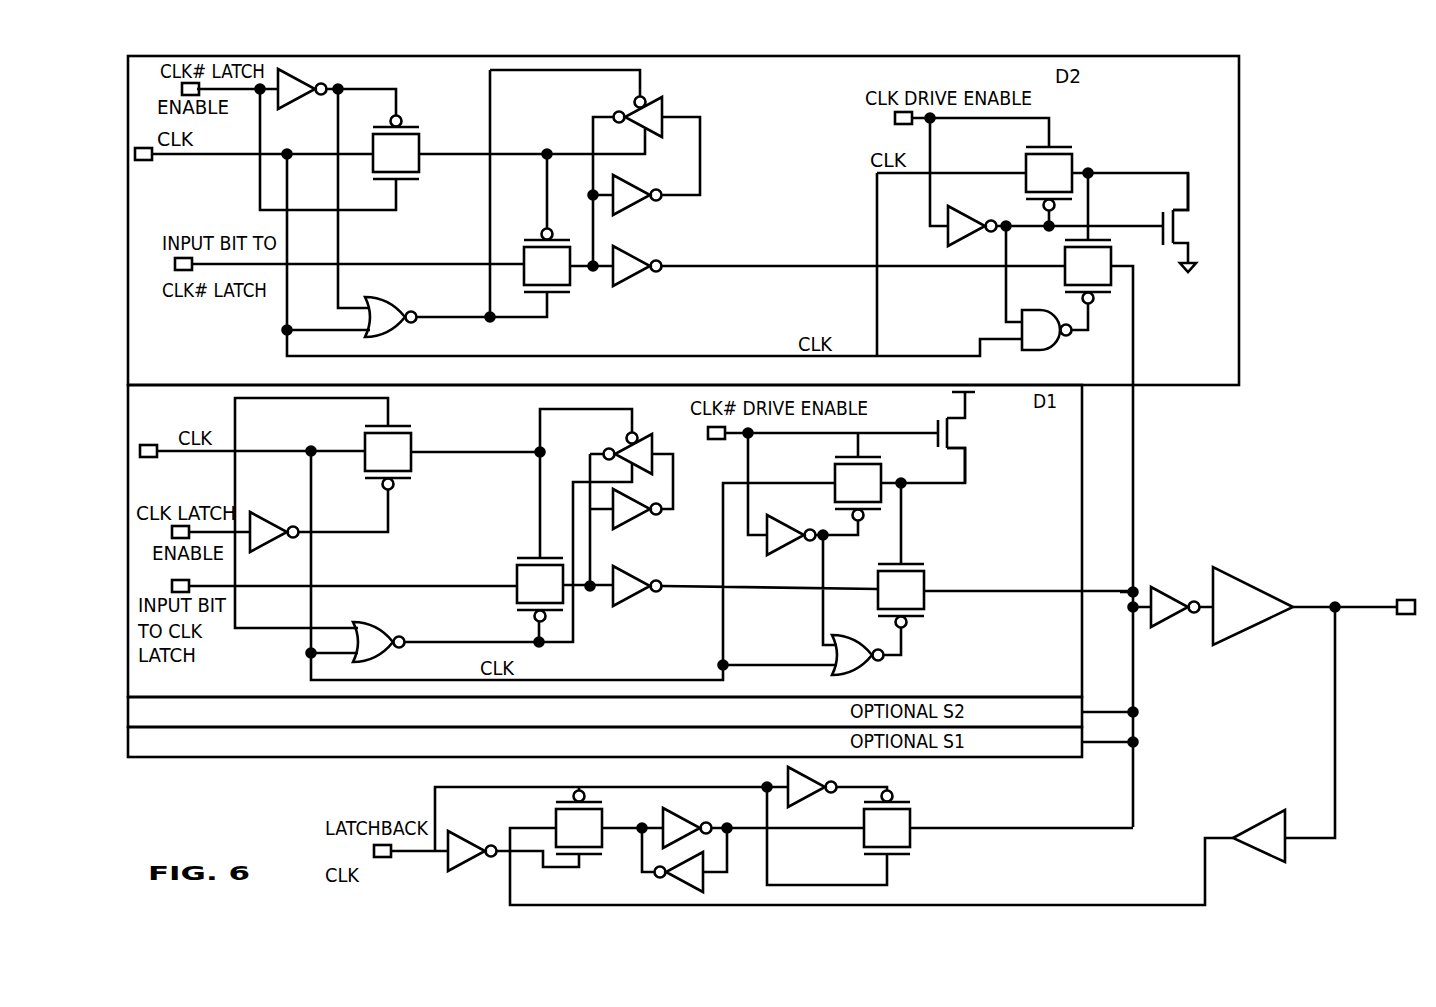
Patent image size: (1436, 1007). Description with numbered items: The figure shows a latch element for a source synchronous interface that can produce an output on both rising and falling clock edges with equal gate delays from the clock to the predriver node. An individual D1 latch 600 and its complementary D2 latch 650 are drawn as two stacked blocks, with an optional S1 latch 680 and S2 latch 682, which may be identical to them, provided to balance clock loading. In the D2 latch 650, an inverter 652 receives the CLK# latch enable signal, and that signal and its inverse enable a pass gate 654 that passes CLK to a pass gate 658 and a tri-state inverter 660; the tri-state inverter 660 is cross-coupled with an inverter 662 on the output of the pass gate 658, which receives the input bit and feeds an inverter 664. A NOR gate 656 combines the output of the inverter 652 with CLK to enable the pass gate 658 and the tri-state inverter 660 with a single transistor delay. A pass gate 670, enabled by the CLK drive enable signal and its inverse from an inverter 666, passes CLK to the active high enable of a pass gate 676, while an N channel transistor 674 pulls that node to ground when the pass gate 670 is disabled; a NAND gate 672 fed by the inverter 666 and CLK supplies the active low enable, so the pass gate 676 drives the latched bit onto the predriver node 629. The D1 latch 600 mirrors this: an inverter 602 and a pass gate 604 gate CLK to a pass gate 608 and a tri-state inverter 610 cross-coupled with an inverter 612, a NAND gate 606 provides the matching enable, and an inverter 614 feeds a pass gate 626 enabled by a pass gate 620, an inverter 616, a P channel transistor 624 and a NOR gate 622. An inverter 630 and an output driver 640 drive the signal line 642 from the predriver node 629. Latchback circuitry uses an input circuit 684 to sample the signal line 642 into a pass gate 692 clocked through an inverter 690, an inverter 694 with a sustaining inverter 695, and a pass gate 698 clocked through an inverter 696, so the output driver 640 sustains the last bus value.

The D1 latch 600 is at (605, 541).
The inverter 602 is at (258, 510).
The pass gate 604 is at (404, 483).
The NAND gate 606 is at (392, 660).
The pass gate 608 is at (515, 572).
The tri-state inverter 610 is at (641, 437).
The inverter 612 is at (632, 523).
The inverter 614 is at (632, 603).
The inverter 616 is at (787, 555).
The pass gate 620 is at (885, 460).
The NOR gate 622 is at (848, 678).
The P channel transistor 624 is at (960, 440).
The pass gate 626 is at (926, 608).
The predriver node 629 is at (1138, 583).
The inverter 630 is at (1162, 628).
The output driver 640 is at (1235, 578).
The signal line 642 is at (1408, 616).
The D2 latch 650 is at (683, 220).
The inverter 652 is at (297, 78).
The pass gate 654 is at (425, 132).
The NOR gate 656 is at (407, 285).
The pass gate 658 is at (572, 285).
The tri-state inverter 660 is at (656, 99).
The inverter 662 is at (632, 205).
The inverter 664 is at (632, 277).
The inverter 666 is at (963, 246).
The pass gate 670 is at (1066, 147).
The NAND gate 672 is at (1045, 351).
The N channel transistor 674 is at (1188, 232).
The pass gate 676 is at (1094, 303).
The S1 latch 680 is at (605, 712).
The S2 latch 682 is at (605, 742).
The input circuit 684 is at (1255, 856).
The inverter 690 is at (465, 868).
The pass gate 692 is at (603, 840).
The inverter 694 is at (672, 812).
The sustaining inverter 695 is at (675, 887).
The inverter 696 is at (800, 770).
The pass gate 698 is at (910, 843).